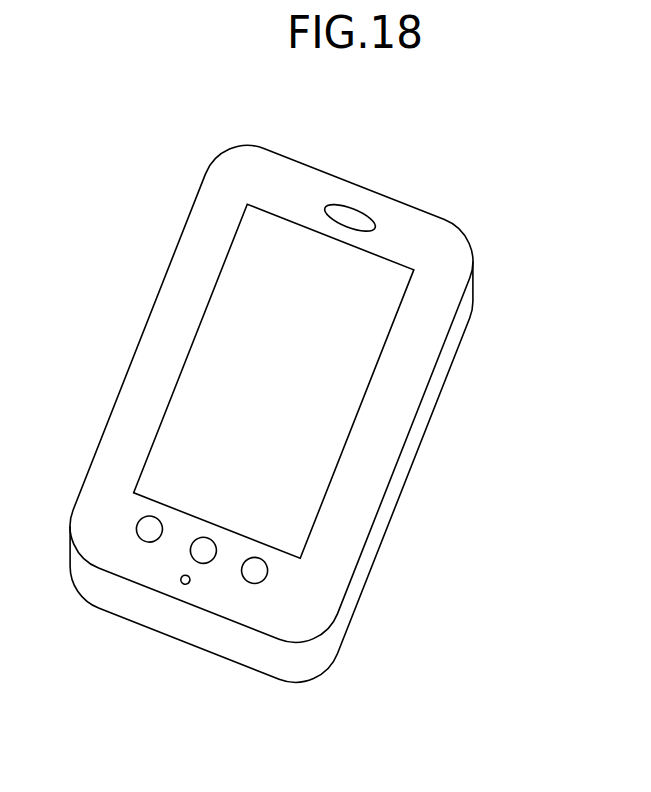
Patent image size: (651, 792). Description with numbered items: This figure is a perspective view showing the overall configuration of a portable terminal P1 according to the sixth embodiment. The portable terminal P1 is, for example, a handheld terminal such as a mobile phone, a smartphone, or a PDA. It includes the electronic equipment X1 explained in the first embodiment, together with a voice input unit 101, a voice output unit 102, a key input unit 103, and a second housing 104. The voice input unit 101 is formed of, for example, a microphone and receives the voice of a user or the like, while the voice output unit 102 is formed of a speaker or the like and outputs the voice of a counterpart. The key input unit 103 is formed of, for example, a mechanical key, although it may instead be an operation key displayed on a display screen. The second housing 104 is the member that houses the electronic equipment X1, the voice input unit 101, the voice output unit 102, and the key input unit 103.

The portable terminal P1 is at (452, 172).
The electronic equipment X1 is at (222, 355).
The voice input unit 101 is at (181, 584).
The voice output unit 102 is at (343, 216).
The key input unit 103 is at (253, 572).
The second housing 104 is at (438, 395).